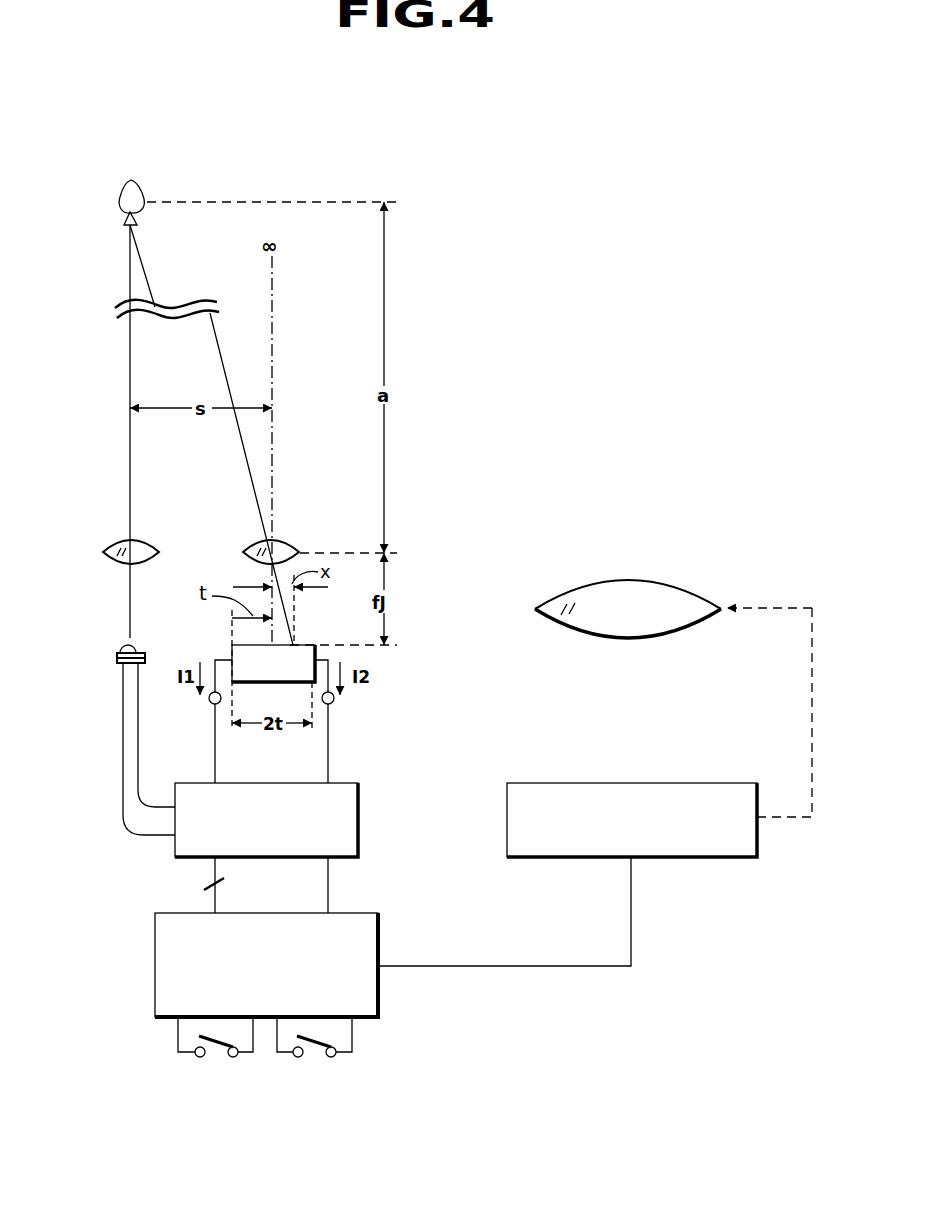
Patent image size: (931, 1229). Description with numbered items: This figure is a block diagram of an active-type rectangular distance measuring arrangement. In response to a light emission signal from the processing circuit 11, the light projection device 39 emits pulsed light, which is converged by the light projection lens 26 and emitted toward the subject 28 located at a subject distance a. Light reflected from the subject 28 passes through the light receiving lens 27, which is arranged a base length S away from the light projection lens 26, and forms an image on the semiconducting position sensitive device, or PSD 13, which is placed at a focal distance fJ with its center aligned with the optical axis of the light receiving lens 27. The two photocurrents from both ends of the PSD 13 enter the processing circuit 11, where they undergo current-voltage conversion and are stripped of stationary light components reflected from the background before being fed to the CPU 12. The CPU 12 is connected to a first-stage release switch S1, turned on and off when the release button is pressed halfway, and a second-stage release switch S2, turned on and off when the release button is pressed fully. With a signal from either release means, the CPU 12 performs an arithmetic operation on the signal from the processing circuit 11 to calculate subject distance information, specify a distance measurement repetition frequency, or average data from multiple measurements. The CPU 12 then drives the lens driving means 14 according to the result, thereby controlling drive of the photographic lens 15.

The subject 28 is at (142, 192).
The light projection lens 26 is at (150, 548).
The light receiving lens 27 is at (288, 548).
The photographic lens 15 is at (662, 598).
The light projection device 39 is at (136, 640).
The semiconducting position sensitive device (PSD) 13 is at (308, 645).
The processing circuit 11 is at (182, 783).
The CPU 12 is at (155, 926).
The lens driving means 14 is at (683, 783).
The first-stage release switch S1 is at (217, 1050).
The second-stage release switch S2 is at (313, 1054).